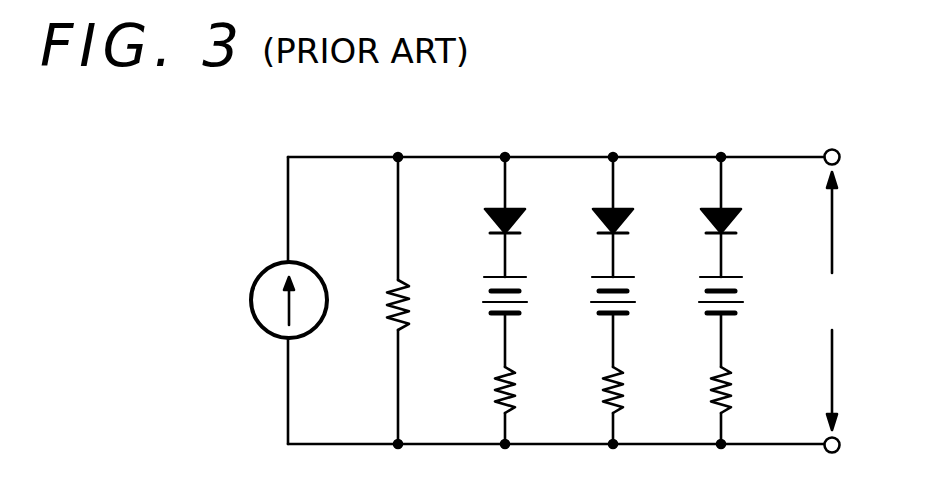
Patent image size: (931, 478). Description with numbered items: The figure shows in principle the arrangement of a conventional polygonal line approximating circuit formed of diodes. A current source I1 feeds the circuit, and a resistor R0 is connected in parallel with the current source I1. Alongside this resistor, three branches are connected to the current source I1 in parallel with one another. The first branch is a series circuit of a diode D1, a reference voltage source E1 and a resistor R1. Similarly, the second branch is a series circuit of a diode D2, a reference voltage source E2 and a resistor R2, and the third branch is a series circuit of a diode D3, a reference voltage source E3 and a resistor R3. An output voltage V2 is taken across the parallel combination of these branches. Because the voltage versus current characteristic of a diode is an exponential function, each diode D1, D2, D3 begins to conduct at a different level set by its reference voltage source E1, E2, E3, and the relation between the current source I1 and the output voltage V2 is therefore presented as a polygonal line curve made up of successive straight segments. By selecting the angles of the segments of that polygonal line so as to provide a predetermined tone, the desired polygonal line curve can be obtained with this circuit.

The current source I1 is at (265, 300).
The resistor R0 is at (381, 300).
The diode D1 is at (486, 217).
The diode D2 is at (594, 217).
The diode D3 is at (702, 217).
The reference voltage source E1 is at (484, 321).
The reference voltage source E2 is at (592, 321).
The reference voltage source E3 is at (700, 321).
The resistor R1 is at (482, 300).
The resistor R2 is at (590, 300).
The resistor R3 is at (698, 300).
The output voltage V2 is at (835, 301).